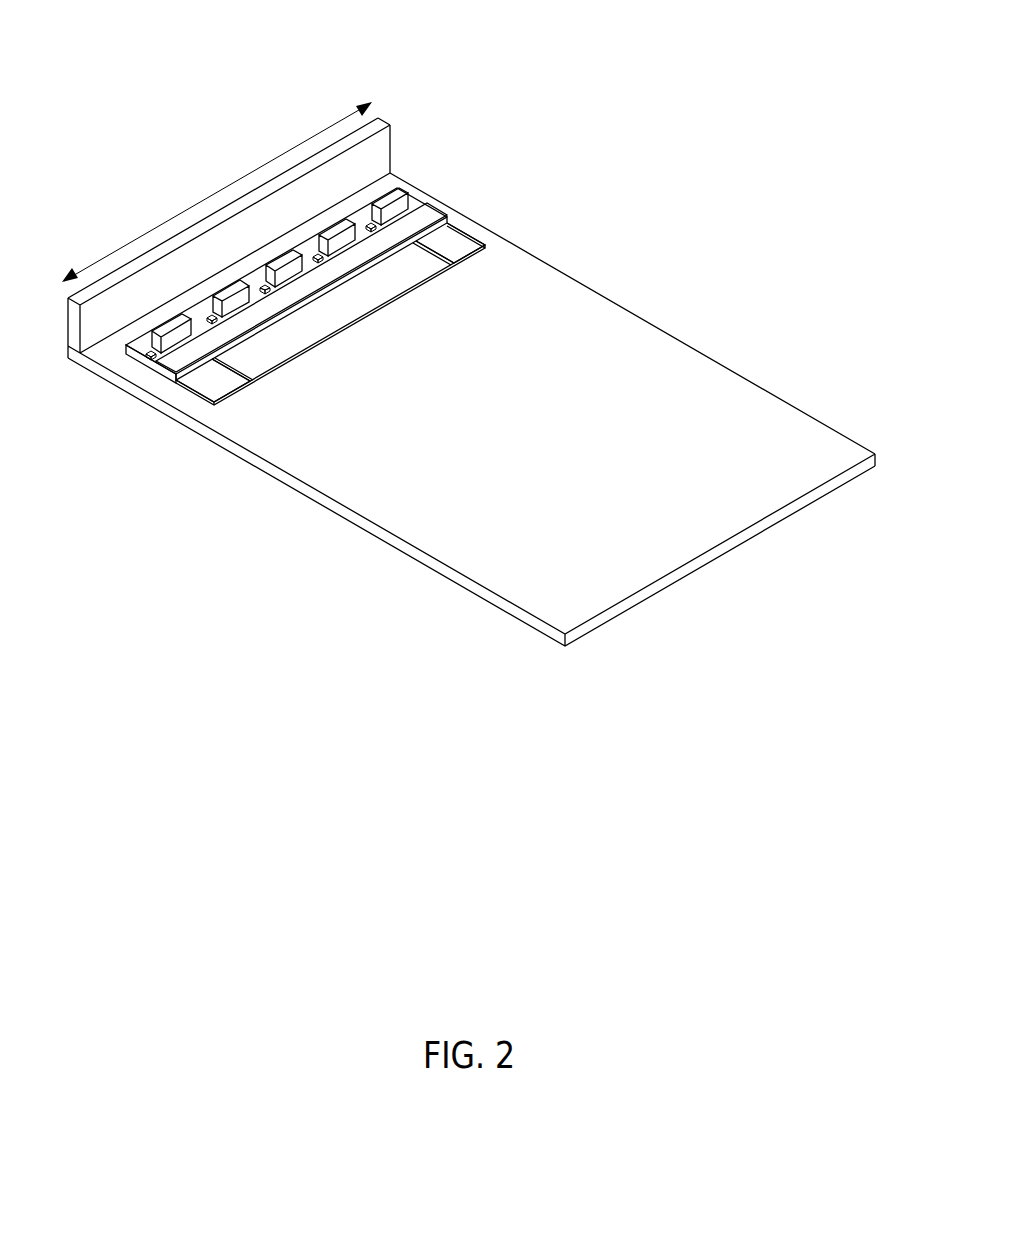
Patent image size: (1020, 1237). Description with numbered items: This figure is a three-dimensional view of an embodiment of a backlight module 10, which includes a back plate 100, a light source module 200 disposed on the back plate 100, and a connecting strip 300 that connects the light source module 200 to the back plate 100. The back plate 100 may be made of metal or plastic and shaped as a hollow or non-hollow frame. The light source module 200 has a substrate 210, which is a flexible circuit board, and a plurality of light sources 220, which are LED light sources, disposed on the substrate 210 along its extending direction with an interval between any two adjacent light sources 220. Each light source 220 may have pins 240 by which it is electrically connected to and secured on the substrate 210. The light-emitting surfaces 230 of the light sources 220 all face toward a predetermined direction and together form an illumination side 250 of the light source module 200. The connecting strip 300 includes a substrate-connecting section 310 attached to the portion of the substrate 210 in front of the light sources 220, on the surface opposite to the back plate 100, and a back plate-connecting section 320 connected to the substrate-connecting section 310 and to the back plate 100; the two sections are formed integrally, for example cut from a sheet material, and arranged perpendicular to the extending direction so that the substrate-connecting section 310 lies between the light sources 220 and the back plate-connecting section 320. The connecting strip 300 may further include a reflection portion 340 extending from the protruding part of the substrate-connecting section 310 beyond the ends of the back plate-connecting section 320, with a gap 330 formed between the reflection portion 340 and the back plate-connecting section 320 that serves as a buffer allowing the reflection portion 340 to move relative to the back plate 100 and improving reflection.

The backlight module 10 is at (206, 34).
The back plate 100 is at (74, 328).
The light source module 200 is at (490, 95).
The substrate 210 is at (422, 197).
The light sources 220 is at (383, 193).
The light-emitting surfaces 230 is at (177, 338).
The pins 240 is at (123, 350).
The illumination side 250 is at (296, 336).
The connecting strip 300 is at (649, 222).
The substrate-connecting section 310 is at (425, 218).
The back plate-connecting section 320 is at (415, 277).
The gap 330 is at (253, 396).
The reflection portion 340 is at (214, 390).